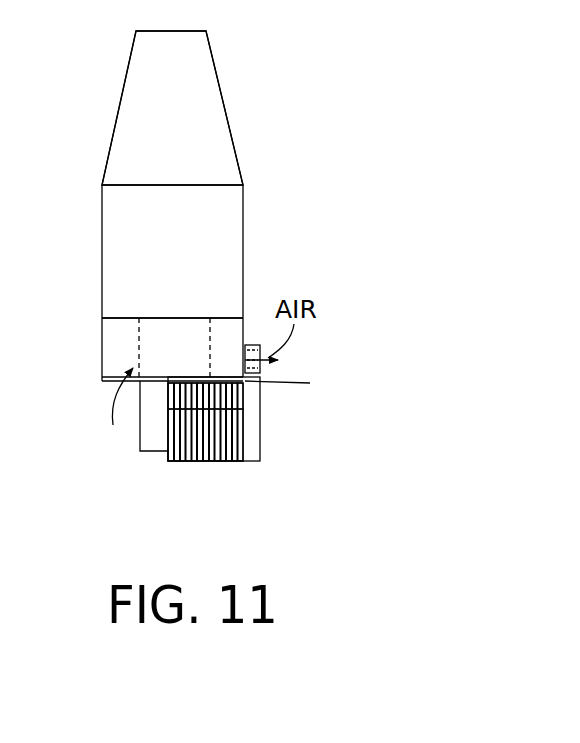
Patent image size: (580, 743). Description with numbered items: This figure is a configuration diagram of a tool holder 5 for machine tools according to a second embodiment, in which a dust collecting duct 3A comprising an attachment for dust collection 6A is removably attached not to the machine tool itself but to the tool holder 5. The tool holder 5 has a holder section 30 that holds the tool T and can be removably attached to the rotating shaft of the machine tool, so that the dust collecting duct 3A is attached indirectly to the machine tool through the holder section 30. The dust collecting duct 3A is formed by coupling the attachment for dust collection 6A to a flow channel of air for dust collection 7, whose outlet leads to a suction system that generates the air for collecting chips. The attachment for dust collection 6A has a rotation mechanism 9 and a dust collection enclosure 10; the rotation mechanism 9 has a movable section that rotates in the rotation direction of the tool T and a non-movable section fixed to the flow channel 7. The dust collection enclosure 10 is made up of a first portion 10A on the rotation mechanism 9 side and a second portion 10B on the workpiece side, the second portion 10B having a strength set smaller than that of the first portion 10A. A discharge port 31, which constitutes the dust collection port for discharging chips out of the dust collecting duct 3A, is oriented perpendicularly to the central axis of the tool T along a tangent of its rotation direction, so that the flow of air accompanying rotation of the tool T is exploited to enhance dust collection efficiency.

The tool holder 5 is at (83, 87).
The holder section 30 is at (245, 228).
The dust collecting duct 3A is at (100, 330).
The flow channel of air for dust collection 7 is at (113, 367).
The discharge port 31 is at (252, 345).
The tool T is at (140, 432).
The rotation mechanism 9 is at (310, 383).
The first portion 10A is at (244, 403).
The second portion 10B is at (244, 430).
The dust collection enclosure 10 is at (348, 407).
The attachment for dust collection 6A is at (415, 367).